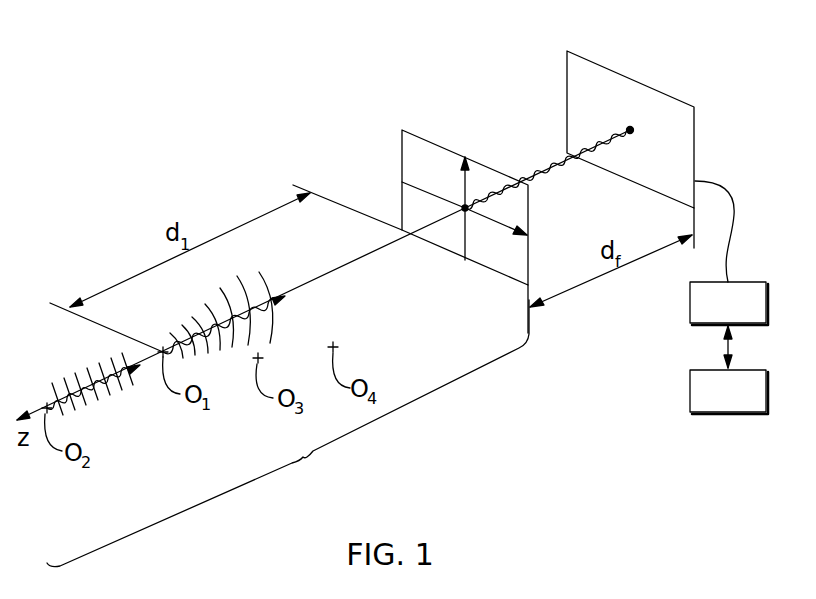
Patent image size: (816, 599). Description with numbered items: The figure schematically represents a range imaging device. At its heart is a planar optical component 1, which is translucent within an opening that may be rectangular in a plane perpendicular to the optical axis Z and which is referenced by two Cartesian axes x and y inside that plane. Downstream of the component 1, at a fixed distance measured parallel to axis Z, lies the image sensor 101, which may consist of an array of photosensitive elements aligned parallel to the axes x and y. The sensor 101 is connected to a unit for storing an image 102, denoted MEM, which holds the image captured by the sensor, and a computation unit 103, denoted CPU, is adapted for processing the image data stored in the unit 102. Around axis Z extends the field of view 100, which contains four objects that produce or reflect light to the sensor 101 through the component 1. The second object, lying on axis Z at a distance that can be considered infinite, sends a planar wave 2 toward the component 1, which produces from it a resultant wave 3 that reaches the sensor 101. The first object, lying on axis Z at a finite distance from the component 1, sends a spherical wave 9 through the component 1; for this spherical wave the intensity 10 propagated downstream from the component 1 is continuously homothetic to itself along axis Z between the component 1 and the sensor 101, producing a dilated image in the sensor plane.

The planar optical component 1 is at (430, 140).
The planar wave 2 is at (113, 385).
The resultant wave 3 is at (549, 171).
The spherical wave 9 is at (282, 300).
The intensity 10 is at (572, 160).
The field of view 100 is at (288, 433).
The image sensor 101 is at (608, 67).
The unit for storing an image 102 is at (688, 305).
The computation unit 103 is at (727, 413).